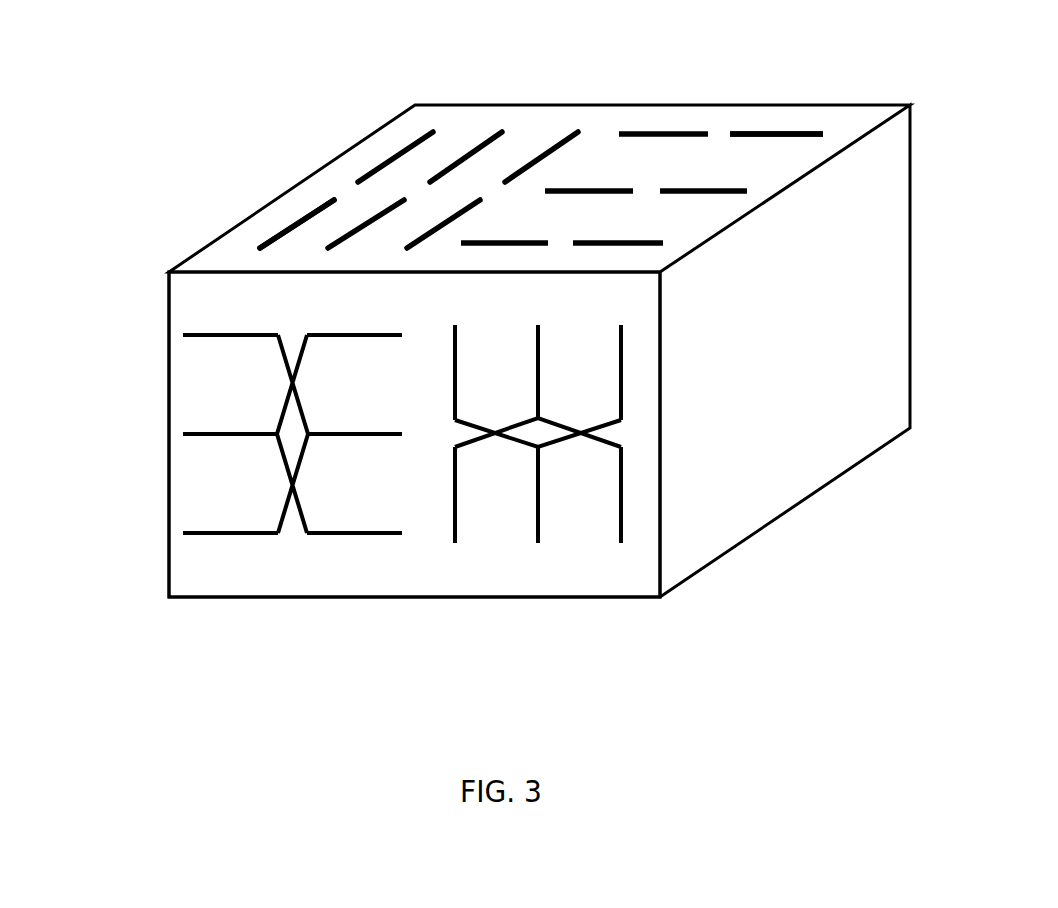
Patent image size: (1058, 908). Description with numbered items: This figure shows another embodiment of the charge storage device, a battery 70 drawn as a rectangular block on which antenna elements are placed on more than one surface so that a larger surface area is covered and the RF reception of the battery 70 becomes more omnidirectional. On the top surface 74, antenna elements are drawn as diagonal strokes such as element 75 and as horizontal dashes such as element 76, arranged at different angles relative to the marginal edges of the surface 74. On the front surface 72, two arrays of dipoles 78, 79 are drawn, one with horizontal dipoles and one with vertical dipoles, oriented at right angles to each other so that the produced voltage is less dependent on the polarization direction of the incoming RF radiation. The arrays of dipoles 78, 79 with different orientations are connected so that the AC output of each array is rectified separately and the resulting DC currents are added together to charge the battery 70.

The battery 70 is at (188, 621).
The surface 72 is at (528, 582).
The surface 74 is at (683, 119).
The diagonal marking 75 is at (268, 242).
The horizontal marking 76 is at (818, 132).
The array of dipoles 78 is at (190, 335).
The array of dipoles 79 is at (621, 516).